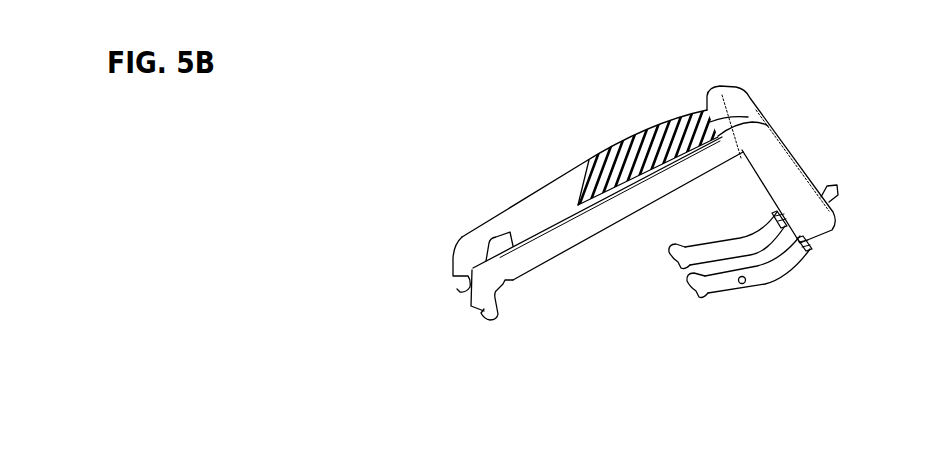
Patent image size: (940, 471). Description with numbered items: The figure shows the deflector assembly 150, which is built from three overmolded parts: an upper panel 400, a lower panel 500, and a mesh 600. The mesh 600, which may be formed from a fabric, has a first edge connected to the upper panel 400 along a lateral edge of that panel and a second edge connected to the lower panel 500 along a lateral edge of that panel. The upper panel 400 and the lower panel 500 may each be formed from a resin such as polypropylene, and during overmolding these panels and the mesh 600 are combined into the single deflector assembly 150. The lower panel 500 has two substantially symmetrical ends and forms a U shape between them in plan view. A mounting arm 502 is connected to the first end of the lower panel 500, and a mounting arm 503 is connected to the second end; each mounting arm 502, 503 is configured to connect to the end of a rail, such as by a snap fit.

The deflector assembly 150 is at (876, 51).
The upper panel 400 is at (604, 226).
The mesh 600 is at (800, 168).
The lower panel 500 is at (800, 252).
The mounting arm 502 is at (690, 297).
The mounting arm 503 is at (667, 256).